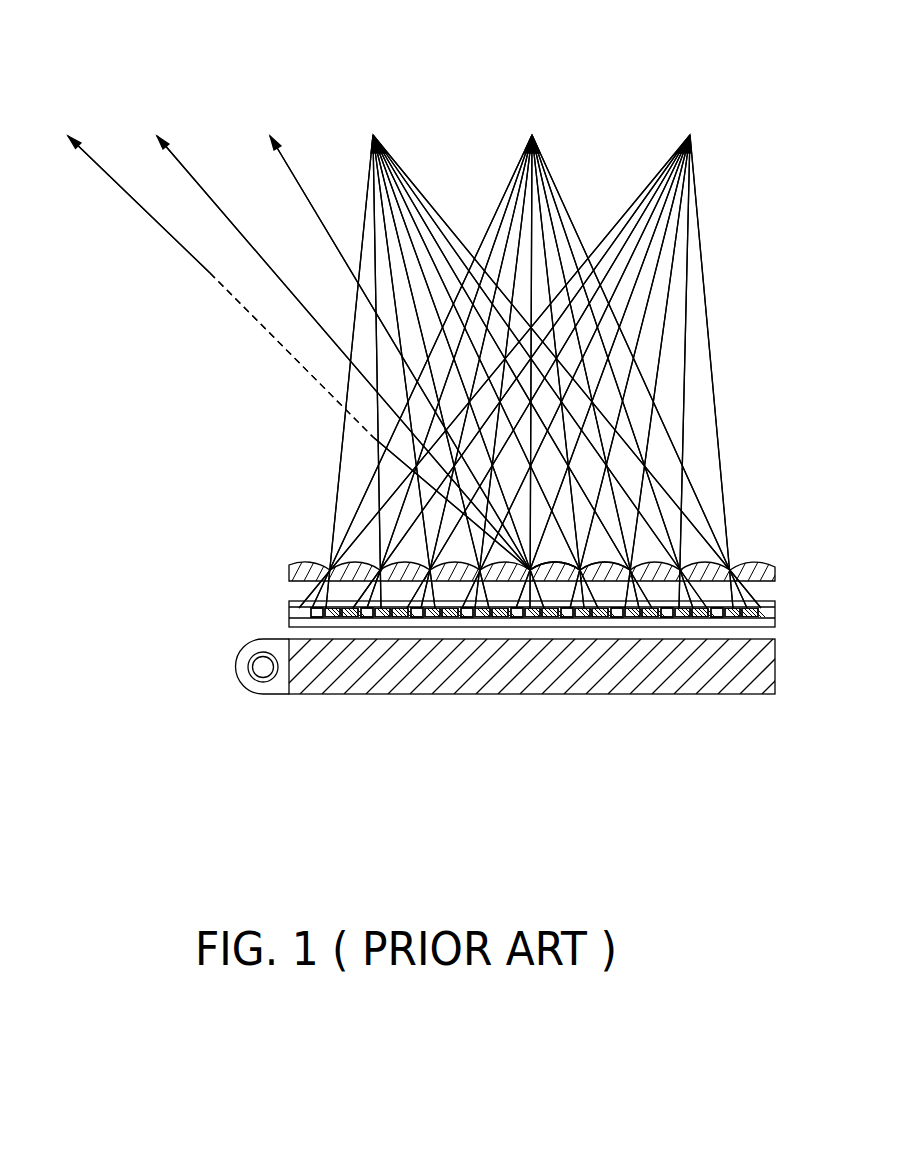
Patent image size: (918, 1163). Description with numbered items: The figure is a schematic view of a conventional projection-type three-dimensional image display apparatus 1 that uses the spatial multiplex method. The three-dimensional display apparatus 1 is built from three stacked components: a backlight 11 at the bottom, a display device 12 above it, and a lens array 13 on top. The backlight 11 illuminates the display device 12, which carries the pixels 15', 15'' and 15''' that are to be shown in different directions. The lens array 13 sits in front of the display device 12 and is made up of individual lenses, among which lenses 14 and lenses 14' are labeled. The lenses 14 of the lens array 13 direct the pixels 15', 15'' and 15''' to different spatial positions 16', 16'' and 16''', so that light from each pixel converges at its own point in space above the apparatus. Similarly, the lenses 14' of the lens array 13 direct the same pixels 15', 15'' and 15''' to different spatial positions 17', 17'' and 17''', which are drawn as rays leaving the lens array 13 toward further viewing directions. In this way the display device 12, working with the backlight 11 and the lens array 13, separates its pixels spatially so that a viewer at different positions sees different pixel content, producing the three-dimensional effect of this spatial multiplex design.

The three-dimensional display apparatus 1 is at (31, 41).
The backlight 11 is at (223, 666).
The display device 12 is at (223, 611).
The lens array 13 is at (223, 575).
The lenses 14 is at (674, 517).
The lenses 14' is at (434, 506).
The pixel 15' is at (517, 673).
The pixel 15'' is at (536, 672).
The pixel 15''' is at (553, 672).
The spatial position 16' is at (516, 355).
The spatial position 16'' is at (529, 355).
The spatial position 16''' is at (543, 355).
The spatial position 17' is at (394, 337).
The spatial position 17'' is at (337, 337).
The spatial position 17''' is at (291, 337).